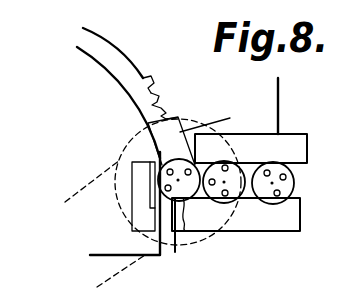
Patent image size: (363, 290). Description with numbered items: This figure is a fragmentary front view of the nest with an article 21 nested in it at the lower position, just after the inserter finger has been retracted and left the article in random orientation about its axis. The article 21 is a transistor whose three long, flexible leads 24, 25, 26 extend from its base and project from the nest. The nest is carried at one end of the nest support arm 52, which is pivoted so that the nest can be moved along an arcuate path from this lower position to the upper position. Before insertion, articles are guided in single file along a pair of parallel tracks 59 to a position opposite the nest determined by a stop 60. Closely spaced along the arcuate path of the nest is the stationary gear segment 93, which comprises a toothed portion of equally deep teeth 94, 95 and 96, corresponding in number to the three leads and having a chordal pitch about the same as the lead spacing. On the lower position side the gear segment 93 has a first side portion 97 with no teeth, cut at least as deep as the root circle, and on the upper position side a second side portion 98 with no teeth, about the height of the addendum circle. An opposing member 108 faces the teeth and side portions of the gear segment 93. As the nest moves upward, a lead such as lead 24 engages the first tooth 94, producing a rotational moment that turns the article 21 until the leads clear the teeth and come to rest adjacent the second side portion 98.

The article 21 is at (147, 243).
The lead 24 is at (197, 163).
The lead 25 is at (156, 154).
The lead 26 is at (165, 188).
The nest support arm 52 is at (213, 232).
The parallel tracks 59 is at (295, 133).
The stop 60 is at (152, 205).
The gear segment 93 is at (270, 107).
The first tooth 94 is at (172, 108).
The tooth 95 is at (163, 95).
The tooth 96 is at (168, 72).
The first side portion 97 is at (220, 108).
The second side portion 98 is at (108, 52).
The opposing member 108 is at (105, 68).